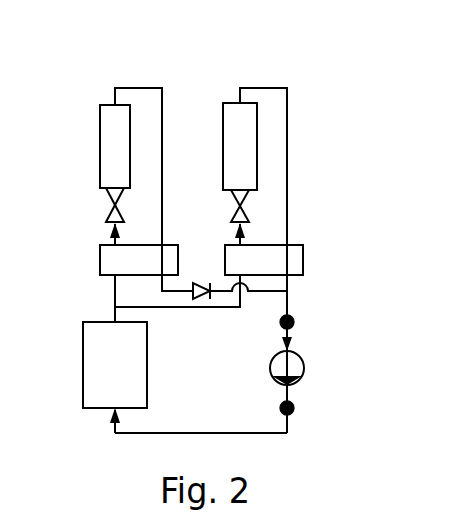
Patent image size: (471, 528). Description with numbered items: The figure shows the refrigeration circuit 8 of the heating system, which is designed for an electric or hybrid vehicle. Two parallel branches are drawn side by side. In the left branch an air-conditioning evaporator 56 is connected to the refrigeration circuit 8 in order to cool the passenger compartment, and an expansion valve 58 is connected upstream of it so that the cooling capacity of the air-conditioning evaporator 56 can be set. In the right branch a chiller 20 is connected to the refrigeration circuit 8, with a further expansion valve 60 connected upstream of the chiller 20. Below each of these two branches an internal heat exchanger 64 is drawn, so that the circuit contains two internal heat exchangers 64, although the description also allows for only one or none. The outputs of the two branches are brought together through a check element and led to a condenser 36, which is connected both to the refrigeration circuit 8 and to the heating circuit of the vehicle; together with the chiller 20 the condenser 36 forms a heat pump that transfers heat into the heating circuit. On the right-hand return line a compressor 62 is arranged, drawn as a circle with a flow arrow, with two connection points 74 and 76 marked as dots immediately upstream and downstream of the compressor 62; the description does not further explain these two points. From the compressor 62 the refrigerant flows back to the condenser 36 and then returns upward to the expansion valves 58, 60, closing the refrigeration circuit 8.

The refrigeration circuit 8 is at (168, 55).
The chiller 20 is at (257, 150).
The condenser 36 is at (115, 365).
The air-conditioning evaporator 56 is at (100, 158).
The expansion valve 58 is at (107, 212).
The expansion valve 60 is at (250, 211).
The compressor 62 is at (304, 368).
The internal heat exchanger 64 is at (100, 258).
The inlet port 74 is at (294, 319).
The outlet port 76 is at (294, 411).